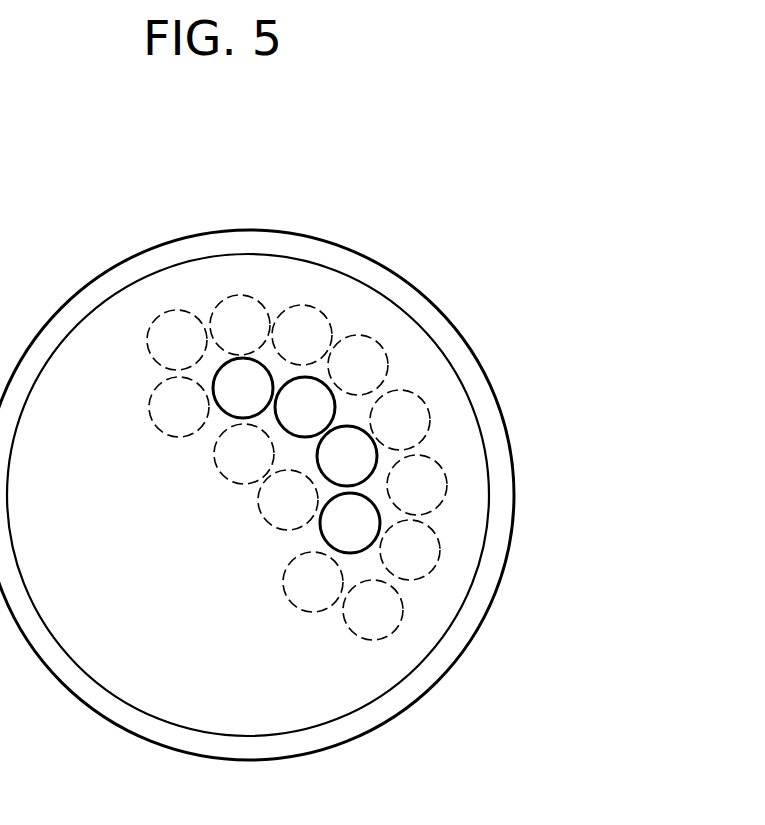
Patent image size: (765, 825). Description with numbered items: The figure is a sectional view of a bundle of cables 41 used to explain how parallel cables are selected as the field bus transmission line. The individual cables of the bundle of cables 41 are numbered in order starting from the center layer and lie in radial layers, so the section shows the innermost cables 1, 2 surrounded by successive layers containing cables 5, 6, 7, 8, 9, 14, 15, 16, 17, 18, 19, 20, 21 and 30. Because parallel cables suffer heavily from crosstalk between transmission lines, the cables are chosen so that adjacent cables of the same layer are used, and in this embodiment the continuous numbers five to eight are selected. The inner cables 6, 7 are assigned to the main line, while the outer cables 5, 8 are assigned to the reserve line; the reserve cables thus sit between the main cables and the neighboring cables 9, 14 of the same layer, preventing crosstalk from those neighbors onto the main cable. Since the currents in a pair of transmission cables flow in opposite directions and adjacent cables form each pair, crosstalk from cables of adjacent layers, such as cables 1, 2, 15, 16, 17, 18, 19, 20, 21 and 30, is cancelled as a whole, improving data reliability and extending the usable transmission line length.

The bundle of cables 41 is at (373, 258).
The cable number 1 is at (244, 454).
The cable number 2 is at (288, 500).
The cable number 5 is at (243, 388).
The cable number 6 is at (305, 407).
The cable number 7 is at (347, 456).
The cable number 8 is at (350, 523).
The cable number 9 is at (313, 582).
The cable number 14 is at (179, 407).
The cable number 15 is at (240, 325).
The cable number 16 is at (302, 335).
The cable number 17 is at (358, 365).
The cable number 18 is at (400, 420).
The cable number 19 is at (417, 485).
The cable number 20 is at (410, 550).
The cable number 21 is at (373, 610).
The cable number 30 is at (177, 340).